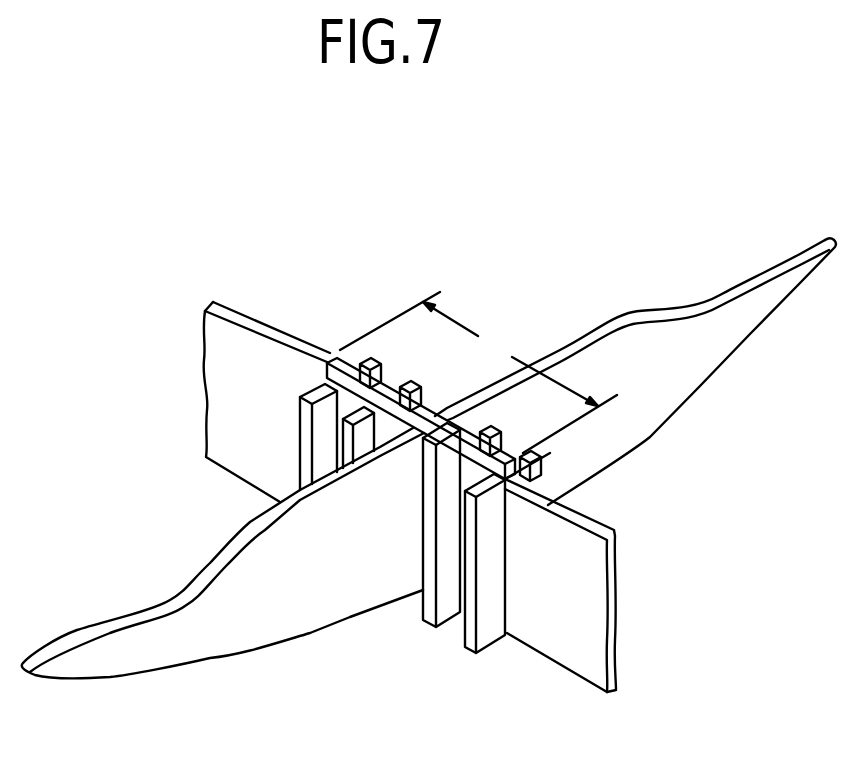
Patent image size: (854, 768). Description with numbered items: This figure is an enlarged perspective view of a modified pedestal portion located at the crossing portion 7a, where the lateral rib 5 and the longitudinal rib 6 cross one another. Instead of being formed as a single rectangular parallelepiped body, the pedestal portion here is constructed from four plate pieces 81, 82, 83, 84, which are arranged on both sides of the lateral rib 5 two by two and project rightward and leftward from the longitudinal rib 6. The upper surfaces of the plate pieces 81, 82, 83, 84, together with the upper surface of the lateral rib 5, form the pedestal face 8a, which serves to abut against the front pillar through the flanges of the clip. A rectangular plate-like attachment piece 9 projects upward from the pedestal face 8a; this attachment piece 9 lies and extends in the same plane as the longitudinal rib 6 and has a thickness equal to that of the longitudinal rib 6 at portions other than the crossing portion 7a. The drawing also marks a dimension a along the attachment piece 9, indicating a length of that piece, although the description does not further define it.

The lateral rib 5 is at (318, 602).
The longitudinal rib 6 is at (587, 664).
The crossing portion 7a is at (320, 338).
The pedestal face 8a is at (330, 392).
The attachment piece 9 is at (467, 428).
The plate piece 81 is at (490, 636).
The plate piece 82 is at (445, 612).
The plate piece 83 is at (343, 447).
The plate piece 84 is at (320, 423).
The pitch distance a is at (478, 372).